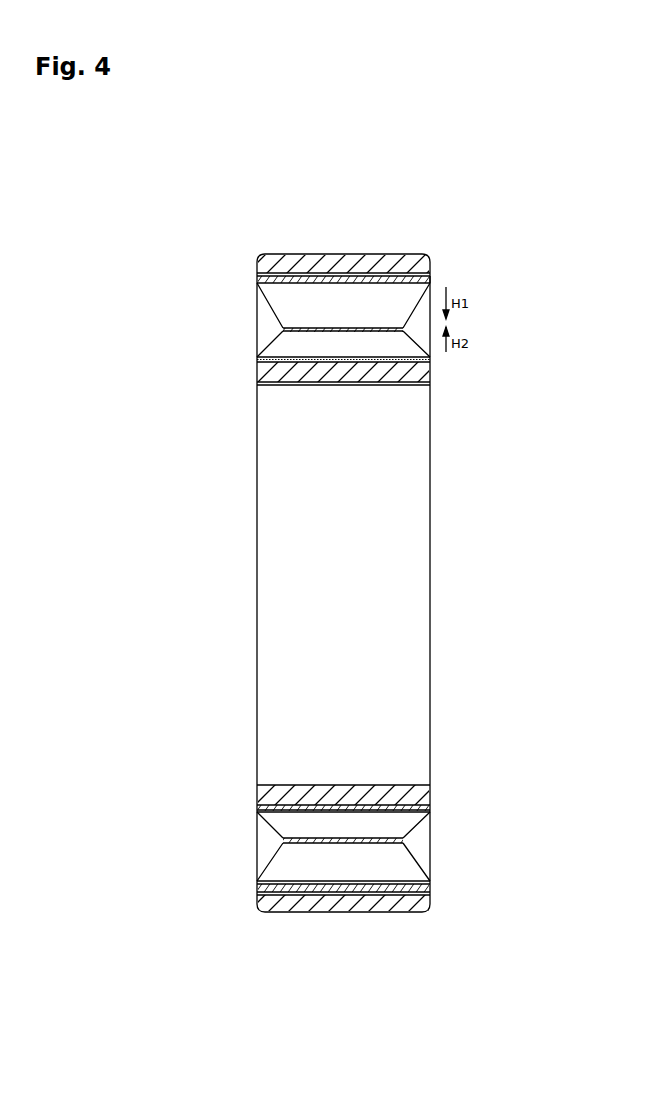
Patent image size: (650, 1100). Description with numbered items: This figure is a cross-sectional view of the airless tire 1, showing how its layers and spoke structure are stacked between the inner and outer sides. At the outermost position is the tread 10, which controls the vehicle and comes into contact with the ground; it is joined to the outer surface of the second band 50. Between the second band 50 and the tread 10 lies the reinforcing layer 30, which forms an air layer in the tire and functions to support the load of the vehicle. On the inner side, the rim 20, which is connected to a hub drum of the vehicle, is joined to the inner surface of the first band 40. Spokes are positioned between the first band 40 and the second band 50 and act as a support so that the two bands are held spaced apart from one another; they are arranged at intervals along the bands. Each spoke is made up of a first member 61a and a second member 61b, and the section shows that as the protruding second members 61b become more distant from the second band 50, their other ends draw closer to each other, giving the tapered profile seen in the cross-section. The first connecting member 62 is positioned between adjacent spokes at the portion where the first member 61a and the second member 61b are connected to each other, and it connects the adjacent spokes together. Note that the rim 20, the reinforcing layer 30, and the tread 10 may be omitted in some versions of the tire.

The airless tire 1 is at (244, 220).
The tread 10 is at (340, 258).
The rim 20 is at (262, 372).
The reinforcing layer 30 is at (431, 276).
The first band 40 is at (431, 357).
The second band 50 is at (258, 283).
The first member 61a is at (276, 340).
The second member 61b is at (276, 312).
The first connecting member 62 is at (370, 330).